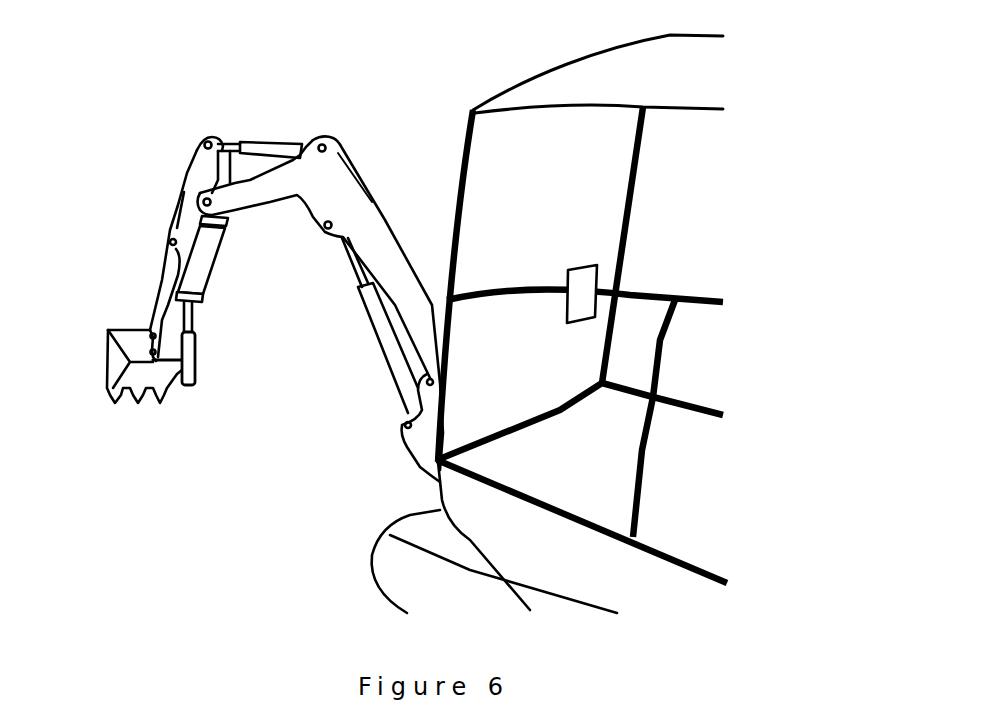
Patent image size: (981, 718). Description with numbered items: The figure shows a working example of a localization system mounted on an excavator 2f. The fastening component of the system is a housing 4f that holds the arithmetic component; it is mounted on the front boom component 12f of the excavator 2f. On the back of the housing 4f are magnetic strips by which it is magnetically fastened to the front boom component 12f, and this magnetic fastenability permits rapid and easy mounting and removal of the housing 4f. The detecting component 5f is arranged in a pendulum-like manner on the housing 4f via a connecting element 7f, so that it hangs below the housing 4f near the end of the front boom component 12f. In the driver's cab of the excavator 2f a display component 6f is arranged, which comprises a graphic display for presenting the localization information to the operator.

The excavator 2f is at (254, 522).
The front boom component 12f is at (183, 227).
The housing 4f is at (210, 248).
The connecting element 7f is at (193, 320).
The detecting component 5f is at (188, 368).
The display component 6f is at (587, 277).